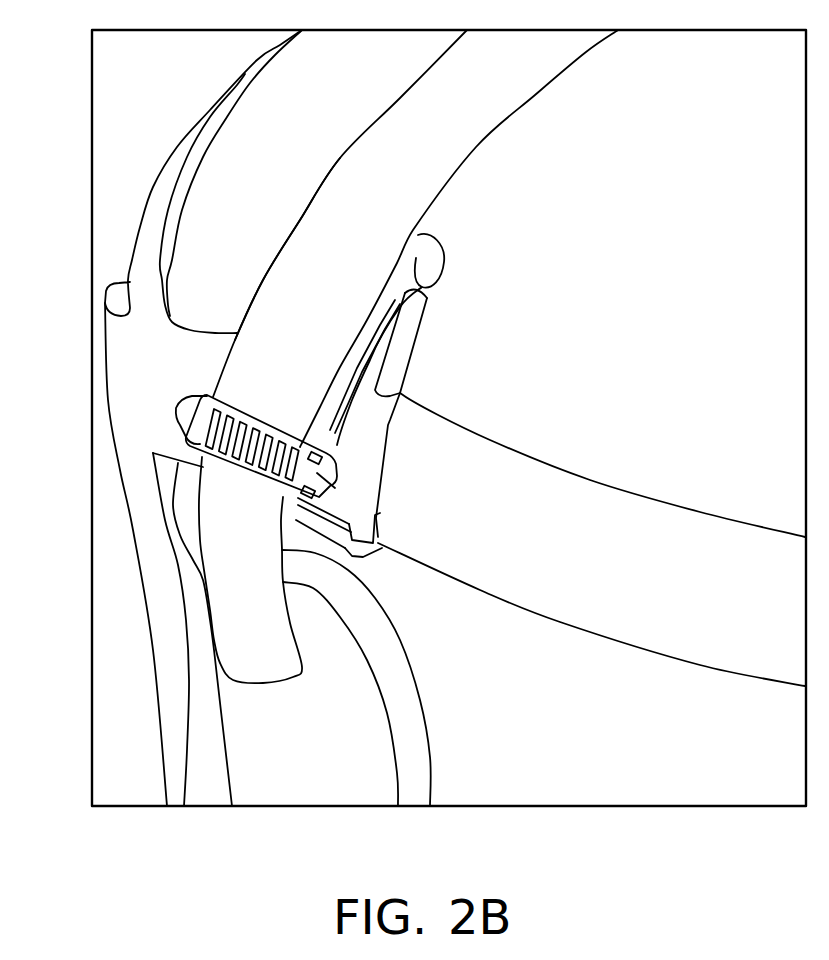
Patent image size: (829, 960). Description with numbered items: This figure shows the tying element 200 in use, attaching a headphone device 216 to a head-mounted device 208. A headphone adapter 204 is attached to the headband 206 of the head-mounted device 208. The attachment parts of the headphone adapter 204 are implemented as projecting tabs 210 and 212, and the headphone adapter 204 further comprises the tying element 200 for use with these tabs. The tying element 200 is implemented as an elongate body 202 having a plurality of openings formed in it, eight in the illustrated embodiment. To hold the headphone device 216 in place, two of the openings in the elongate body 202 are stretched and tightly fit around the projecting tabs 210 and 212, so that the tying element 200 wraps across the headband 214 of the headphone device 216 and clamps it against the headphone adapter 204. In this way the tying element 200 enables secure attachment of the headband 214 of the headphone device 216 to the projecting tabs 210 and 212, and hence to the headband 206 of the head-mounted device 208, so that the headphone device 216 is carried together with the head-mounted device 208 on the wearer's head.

The tying element 200 is at (194, 381).
The elongate body 202 is at (176, 473).
The headphone adapter 204 is at (466, 287).
The headband 206 is at (550, 486).
The head-mounted device 208 is at (162, 418).
The projecting tab 210 is at (112, 429).
The projecting tab 212 is at (403, 516).
The headband 214 is at (271, 249).
The headphone device 216 is at (408, 356).